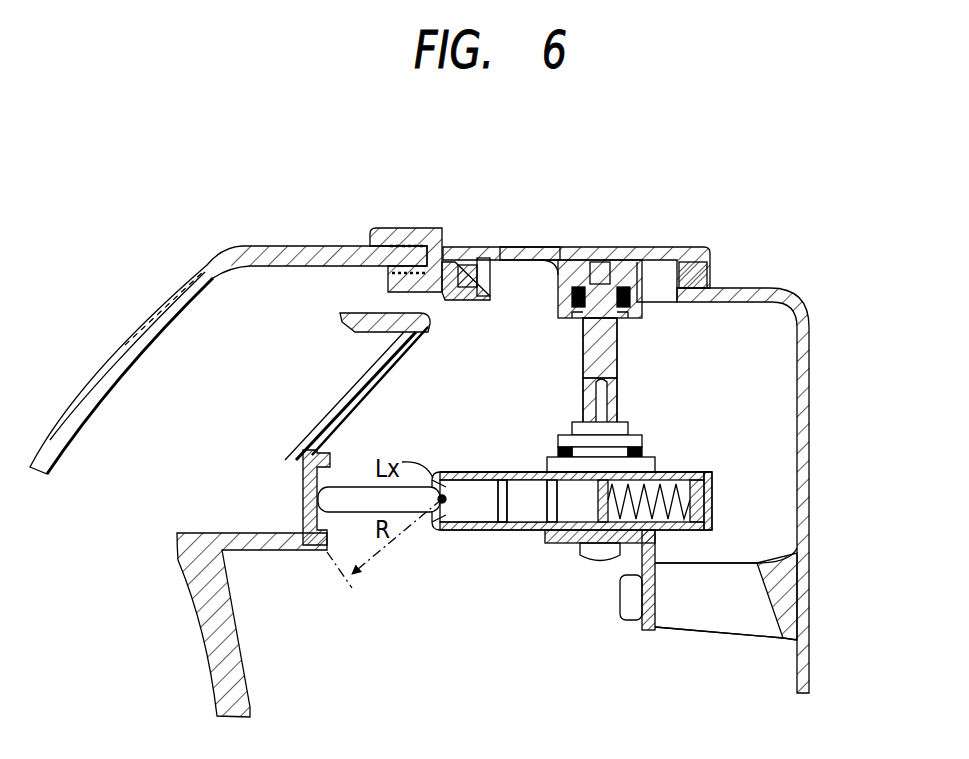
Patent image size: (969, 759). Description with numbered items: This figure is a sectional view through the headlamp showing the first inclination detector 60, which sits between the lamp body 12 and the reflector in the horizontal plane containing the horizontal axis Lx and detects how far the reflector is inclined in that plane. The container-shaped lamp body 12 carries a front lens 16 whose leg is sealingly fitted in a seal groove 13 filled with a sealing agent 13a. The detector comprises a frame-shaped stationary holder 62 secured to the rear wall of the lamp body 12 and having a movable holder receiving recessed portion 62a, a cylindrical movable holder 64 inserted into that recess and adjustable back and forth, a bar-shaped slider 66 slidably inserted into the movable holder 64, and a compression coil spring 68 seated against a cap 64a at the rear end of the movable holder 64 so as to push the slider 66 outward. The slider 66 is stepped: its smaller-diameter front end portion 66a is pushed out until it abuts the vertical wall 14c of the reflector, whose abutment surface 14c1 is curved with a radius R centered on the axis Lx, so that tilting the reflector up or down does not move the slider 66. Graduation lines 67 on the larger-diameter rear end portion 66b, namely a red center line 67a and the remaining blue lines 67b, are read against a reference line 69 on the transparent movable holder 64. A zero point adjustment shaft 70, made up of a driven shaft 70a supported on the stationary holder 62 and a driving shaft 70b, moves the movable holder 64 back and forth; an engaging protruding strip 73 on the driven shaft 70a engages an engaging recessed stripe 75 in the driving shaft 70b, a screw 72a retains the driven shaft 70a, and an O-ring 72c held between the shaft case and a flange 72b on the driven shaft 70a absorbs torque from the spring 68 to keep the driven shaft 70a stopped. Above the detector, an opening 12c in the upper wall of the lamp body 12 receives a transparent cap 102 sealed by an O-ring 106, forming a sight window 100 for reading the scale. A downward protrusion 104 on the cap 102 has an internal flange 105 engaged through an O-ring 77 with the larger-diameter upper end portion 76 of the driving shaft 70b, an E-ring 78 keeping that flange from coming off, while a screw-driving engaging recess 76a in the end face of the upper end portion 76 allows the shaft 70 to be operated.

The lamp body 12 is at (803, 290).
The opening 12c is at (520, 277).
The seal groove 13 is at (398, 230).
The sealing agent 13a is at (385, 242).
The vertical wall 14c is at (303, 490).
The curved surface 14c1 is at (330, 470).
The front lens 16 is at (173, 293).
The first inclination detector 60 is at (481, 448).
The stationary holder 62 is at (657, 460).
The movable holder receiving recessed portion 62a is at (580, 560).
The movable holder 64 is at (707, 545).
The cap 64a is at (714, 515).
The slider 66 is at (546, 575).
The front end portion 66a is at (407, 523).
The rear end portion 66b is at (473, 531).
The graduation lines 67 is at (536, 579).
The center line 67a is at (533, 524).
The piston flange 67b is at (518, 528).
The compression coil spring 68 is at (683, 543).
The reference line 69 is at (537, 472).
The zero point adjustment shaft 70 is at (681, 365).
The driven shaft 70a is at (661, 400).
The driving shaft 70b is at (620, 340).
The screw 72a is at (623, 593).
The cap 72b is at (643, 440).
The O-ring 72c is at (642, 457).
The engaging protruding strip 73 is at (596, 401).
The engaging recessed stripe 75 is at (583, 385).
The upper end portion 76 is at (623, 287).
The screw-driving engaging recess 76a is at (580, 287).
The O-ring 77 is at (707, 270).
The valve body flange 78 is at (578, 325).
The sight window 100 is at (482, 226).
The transparent cap 102 is at (668, 258).
The downward protrusion 104 is at (547, 262).
The internal flange 105 is at (605, 285).
The O-ring 106 is at (462, 262).